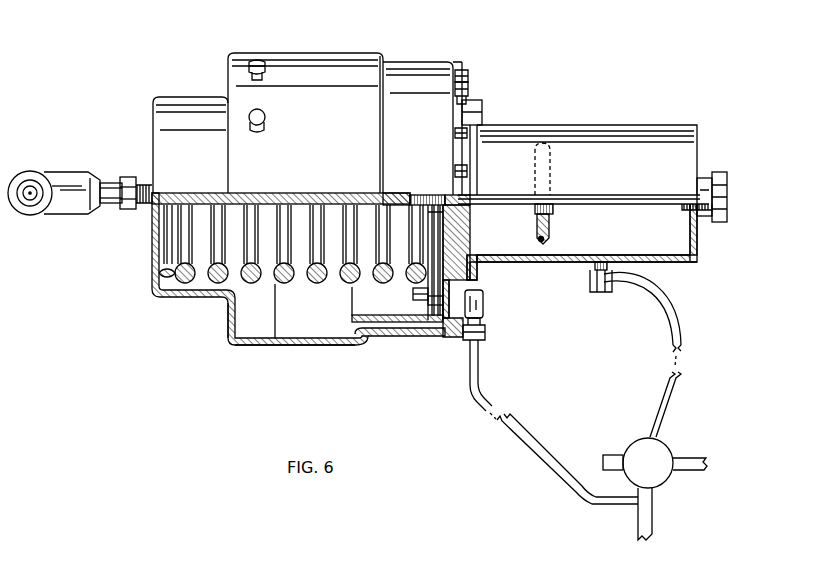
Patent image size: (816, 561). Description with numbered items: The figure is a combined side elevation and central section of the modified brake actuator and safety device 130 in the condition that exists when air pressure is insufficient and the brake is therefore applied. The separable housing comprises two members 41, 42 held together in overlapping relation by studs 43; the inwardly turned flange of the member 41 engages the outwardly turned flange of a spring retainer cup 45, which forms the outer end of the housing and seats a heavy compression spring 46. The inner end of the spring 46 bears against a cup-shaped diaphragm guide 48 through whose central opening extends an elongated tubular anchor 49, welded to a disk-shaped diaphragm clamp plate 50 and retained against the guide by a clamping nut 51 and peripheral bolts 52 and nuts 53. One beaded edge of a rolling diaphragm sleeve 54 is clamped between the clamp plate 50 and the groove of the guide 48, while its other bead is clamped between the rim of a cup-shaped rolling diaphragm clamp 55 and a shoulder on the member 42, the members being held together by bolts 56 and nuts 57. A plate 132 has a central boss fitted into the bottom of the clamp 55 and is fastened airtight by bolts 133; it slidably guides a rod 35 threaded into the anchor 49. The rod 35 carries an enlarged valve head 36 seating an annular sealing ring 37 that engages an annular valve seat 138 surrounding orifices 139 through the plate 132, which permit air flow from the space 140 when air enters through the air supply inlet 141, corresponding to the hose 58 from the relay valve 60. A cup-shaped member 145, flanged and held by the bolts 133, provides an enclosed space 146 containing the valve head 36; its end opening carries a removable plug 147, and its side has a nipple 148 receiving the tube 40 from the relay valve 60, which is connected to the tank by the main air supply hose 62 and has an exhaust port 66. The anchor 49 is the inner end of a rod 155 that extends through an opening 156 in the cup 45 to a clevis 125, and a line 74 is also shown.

The brake actuator and safety device 130 is at (444, 51).
The clevis 125 is at (67, 182).
The opening 156 is at (150, 208).
The studs 43 is at (264, 118).
The rod 155 is at (288, 193).
The anchor 49 is at (392, 194).
The orifices 139 is at (459, 200).
The rod 35 is at (494, 195).
The nuts 57 is at (466, 74).
The bolts 56 is at (470, 92).
The bolts 133 is at (481, 120).
The cup-shaped member 145 is at (622, 134).
The plug 147 is at (720, 175).
The enclosed space 146 is at (690, 238).
The valve head 36 is at (550, 220).
The annular sealing ring 37 is at (539, 241).
The annular valve seat 138 is at (466, 238).
The plate 132 is at (462, 253).
The diaphragm clamp plate 50 is at (432, 240).
The clamping nut 51 is at (430, 222).
The bolts 52 is at (413, 293).
The nuts 53 is at (428, 302).
The compression spring 46 is at (316, 283).
The diaphragm guide 48 is at (415, 276).
The spring retainer cup 45 is at (208, 297).
The housing member 41 is at (229, 330).
The housing member 42 is at (305, 345).
The rolling diaphragm sleeve 54 is at (353, 343).
The rolling diaphragm clamp 55 is at (420, 337).
The space 140 is at (448, 338).
The air supply inlet 141 is at (484, 302).
The nipple 148 is at (592, 283).
The air supply hose 40 is at (680, 313).
The hose 58 is at (554, 470).
The relay valve 60 is at (631, 447).
The exhaust port 66 is at (603, 462).
The line 74 is at (694, 458).
The main air supply hose 62 is at (652, 508).